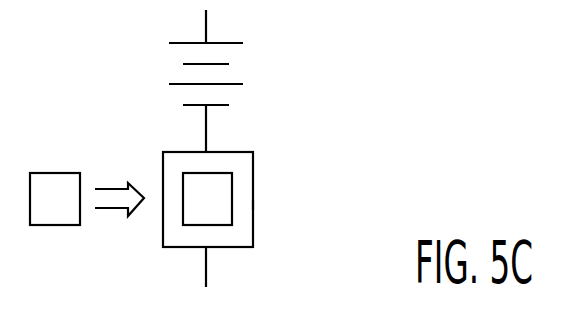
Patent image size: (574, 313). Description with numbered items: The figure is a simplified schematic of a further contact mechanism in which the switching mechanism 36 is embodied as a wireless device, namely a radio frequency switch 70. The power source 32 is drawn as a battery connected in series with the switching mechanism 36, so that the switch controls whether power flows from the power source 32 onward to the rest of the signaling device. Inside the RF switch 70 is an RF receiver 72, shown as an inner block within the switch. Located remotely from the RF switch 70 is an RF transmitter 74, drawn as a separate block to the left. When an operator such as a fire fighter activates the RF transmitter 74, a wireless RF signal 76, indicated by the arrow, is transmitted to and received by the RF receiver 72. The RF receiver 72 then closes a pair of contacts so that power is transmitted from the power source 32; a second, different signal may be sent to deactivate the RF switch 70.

The power source 32 is at (263, 74).
The switching mechanism 36 is at (266, 154).
The RF switch 70 is at (253, 205).
The RF receiver 72 is at (218, 210).
The RF transmitter 74 is at (64, 212).
The wireless RF signal 76 is at (108, 190).